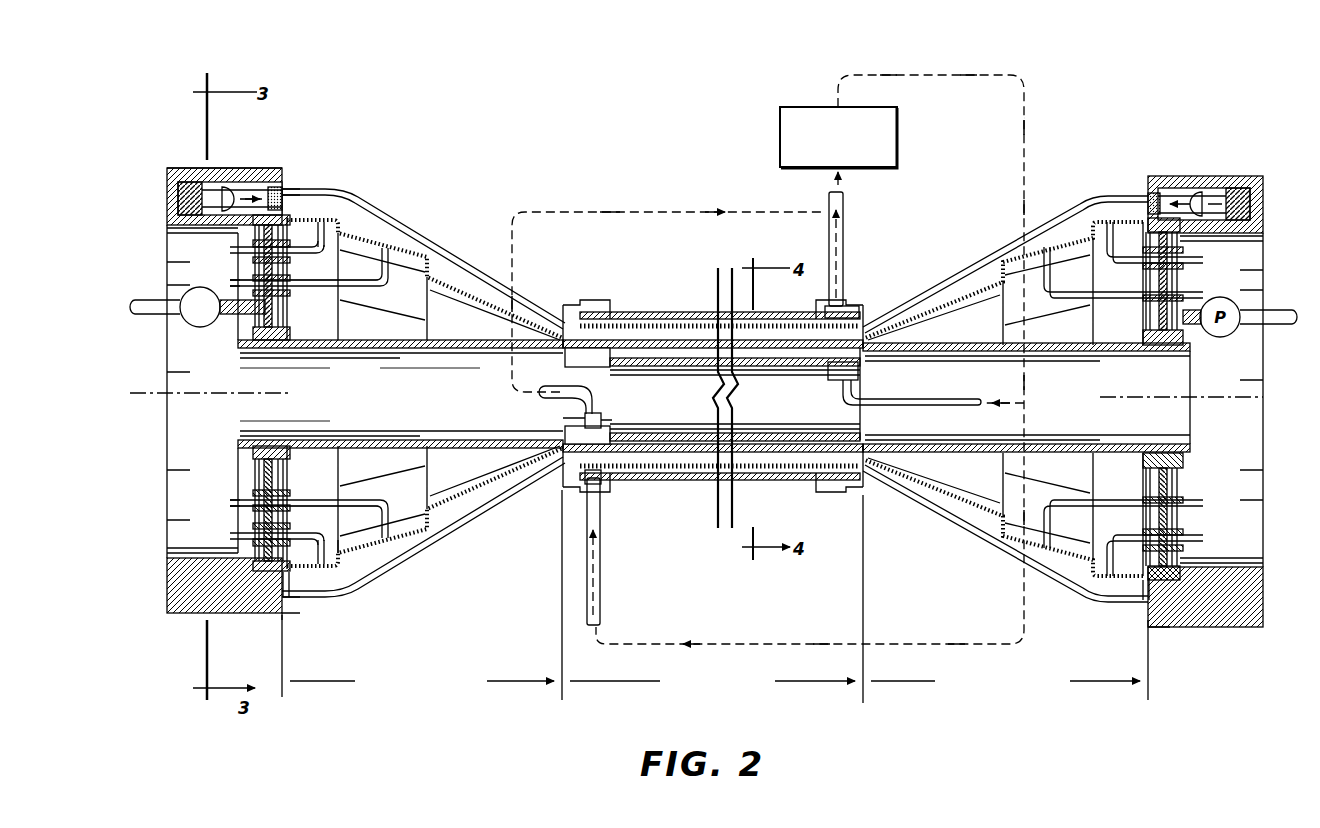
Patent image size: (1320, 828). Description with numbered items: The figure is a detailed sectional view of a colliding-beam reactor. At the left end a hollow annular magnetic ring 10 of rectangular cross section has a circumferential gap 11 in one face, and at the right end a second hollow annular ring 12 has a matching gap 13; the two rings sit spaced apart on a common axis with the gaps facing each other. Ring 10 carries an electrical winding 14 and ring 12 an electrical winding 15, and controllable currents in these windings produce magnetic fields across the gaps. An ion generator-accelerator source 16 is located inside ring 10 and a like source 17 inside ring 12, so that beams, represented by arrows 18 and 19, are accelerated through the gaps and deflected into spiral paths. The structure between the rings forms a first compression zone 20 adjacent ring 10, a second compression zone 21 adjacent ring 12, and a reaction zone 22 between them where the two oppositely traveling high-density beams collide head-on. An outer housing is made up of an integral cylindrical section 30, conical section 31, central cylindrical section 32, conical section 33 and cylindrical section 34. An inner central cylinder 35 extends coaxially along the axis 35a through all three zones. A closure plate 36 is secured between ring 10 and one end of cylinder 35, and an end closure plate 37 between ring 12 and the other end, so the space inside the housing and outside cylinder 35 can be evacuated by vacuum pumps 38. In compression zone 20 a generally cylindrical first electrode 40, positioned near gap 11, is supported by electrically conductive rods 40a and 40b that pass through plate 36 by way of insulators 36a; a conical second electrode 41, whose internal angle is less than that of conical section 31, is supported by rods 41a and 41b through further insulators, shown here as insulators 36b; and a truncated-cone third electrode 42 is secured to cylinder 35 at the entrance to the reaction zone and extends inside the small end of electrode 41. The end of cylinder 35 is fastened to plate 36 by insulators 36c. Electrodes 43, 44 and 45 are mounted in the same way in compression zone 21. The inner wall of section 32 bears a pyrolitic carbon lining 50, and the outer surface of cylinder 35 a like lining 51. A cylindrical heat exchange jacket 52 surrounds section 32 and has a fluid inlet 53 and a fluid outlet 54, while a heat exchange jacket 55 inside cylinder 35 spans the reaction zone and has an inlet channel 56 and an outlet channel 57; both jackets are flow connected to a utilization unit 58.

The hollow annular magnetic ring 10 is at (180, 167).
The circumferential gap 11 is at (290, 198).
The second hollow annular ring 12 is at (1250, 176).
The gap 13 is at (1150, 206).
The electrical winding 14 is at (170, 186).
The electrical winding 15 is at (1250, 204).
The ion generator-accelerator source 16 is at (232, 184).
The ion generator-accelerator source 17 is at (1208, 195).
The arrows 18 is at (262, 192).
The arrows 19 is at (1190, 198).
The first compression zone 20 is at (422, 603).
The second compression zone 21 is at (1009, 671).
The reaction zone 22 is at (716, 605).
The cylindrical section 30 is at (298, 612).
The conical section 31 is at (428, 537).
The cylindrical section 32 is at (684, 478).
The conical section 33 is at (962, 529).
The cylindrical section 34 is at (1127, 611).
The inner central cylinder 35 is at (352, 438).
The axis 35a is at (308, 381).
The closure plate 36 is at (256, 472).
The insulators 36a is at (232, 250).
The coolant pipe 36b is at (250, 281).
The insulators 36c is at (242, 340).
The end closure plate 37 is at (1168, 480).
The vacuum pumps 38 is at (206, 322).
The first electrode 40 is at (319, 572).
The electrically conductive rod 40a is at (328, 252).
The electrically conductive rod 40b is at (328, 540).
The second electrode 41 is at (370, 553).
The supporting rod 41a is at (357, 290).
The supporting rod 41b is at (368, 500).
The third electrode 42 is at (497, 488).
The electrode 43 is at (1083, 595).
The electrode 44 is at (1008, 548).
The electrode 45 is at (925, 485).
The lining 50 is at (627, 325).
The lining 51 is at (656, 342).
The heat exchange jacket 52 is at (682, 312).
The fluid inlet 53 is at (606, 488).
The fluid outlet 54 is at (845, 306).
The heat exchange jacket 55 is at (683, 363).
The inlet channel 56 is at (858, 383).
The outlet channel 57 is at (603, 419).
The utilization unit 58 is at (810, 359).